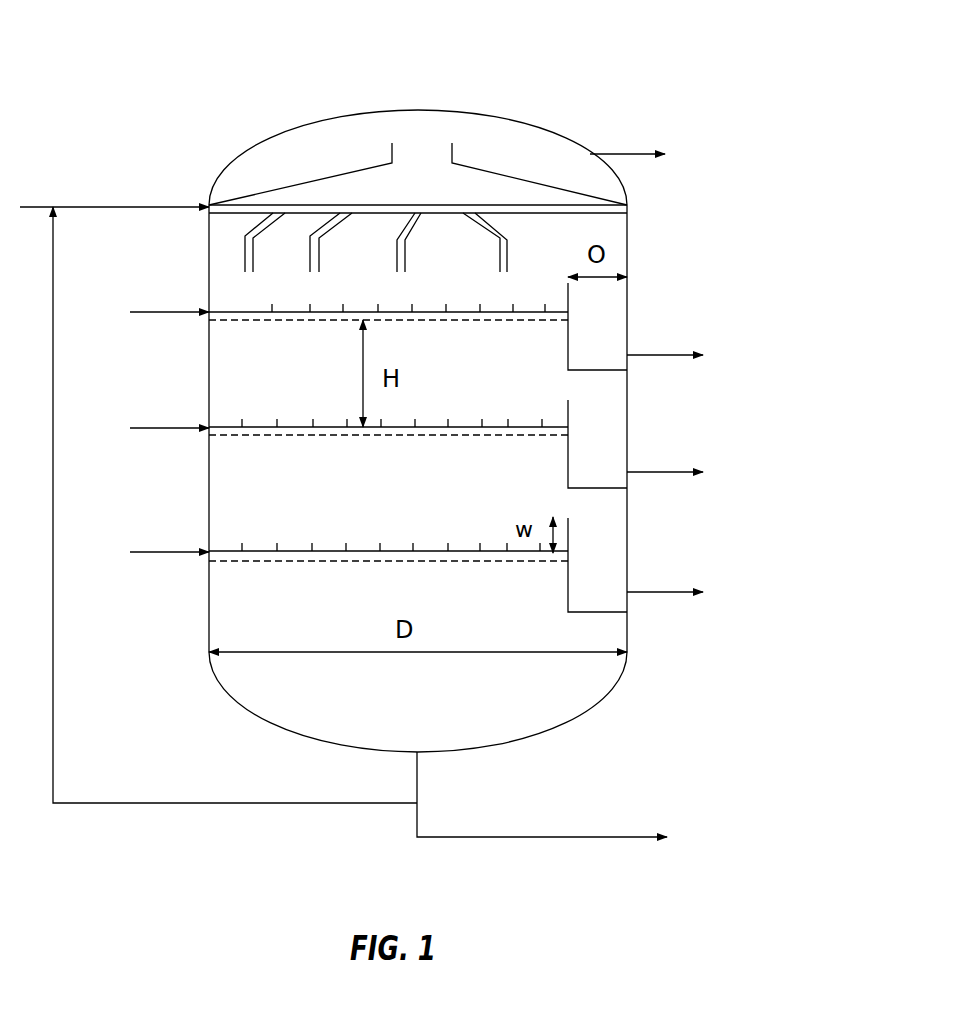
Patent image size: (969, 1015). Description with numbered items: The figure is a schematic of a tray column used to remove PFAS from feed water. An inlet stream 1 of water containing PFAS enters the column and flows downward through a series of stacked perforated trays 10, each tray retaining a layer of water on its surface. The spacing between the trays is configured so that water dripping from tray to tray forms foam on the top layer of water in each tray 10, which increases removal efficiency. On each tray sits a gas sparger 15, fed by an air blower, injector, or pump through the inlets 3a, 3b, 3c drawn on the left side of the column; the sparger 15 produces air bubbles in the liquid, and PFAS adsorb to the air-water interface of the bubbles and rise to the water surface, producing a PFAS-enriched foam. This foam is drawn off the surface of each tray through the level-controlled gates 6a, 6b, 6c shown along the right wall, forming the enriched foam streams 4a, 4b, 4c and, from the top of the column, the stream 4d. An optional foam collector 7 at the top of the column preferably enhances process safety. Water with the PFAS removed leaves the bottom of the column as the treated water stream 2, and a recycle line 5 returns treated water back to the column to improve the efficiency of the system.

The inlet stream 1 is at (114, 188).
The treated water stream 2 is at (542, 794).
The gas sparger inlet 3a is at (324, 547).
The gas sparger inlet 3b is at (324, 424).
The gas sparger inlet 3c is at (324, 312).
The enriched foam stream 4a is at (688, 591).
The enriched foam stream 4b is at (689, 471).
The enriched foam stream 4c is at (688, 354).
The enriched foam stream 4d is at (650, 153).
The recycle line 5 is at (235, 505).
The level-controlled gate 6a is at (597, 565).
The level-controlled gate 6b is at (597, 444).
The level-controlled gate 6c is at (597, 326).
The foam collector 7 is at (507, 152).
The perforated tray 10 is at (362, 562).
The gas sparger 15 is at (300, 427).